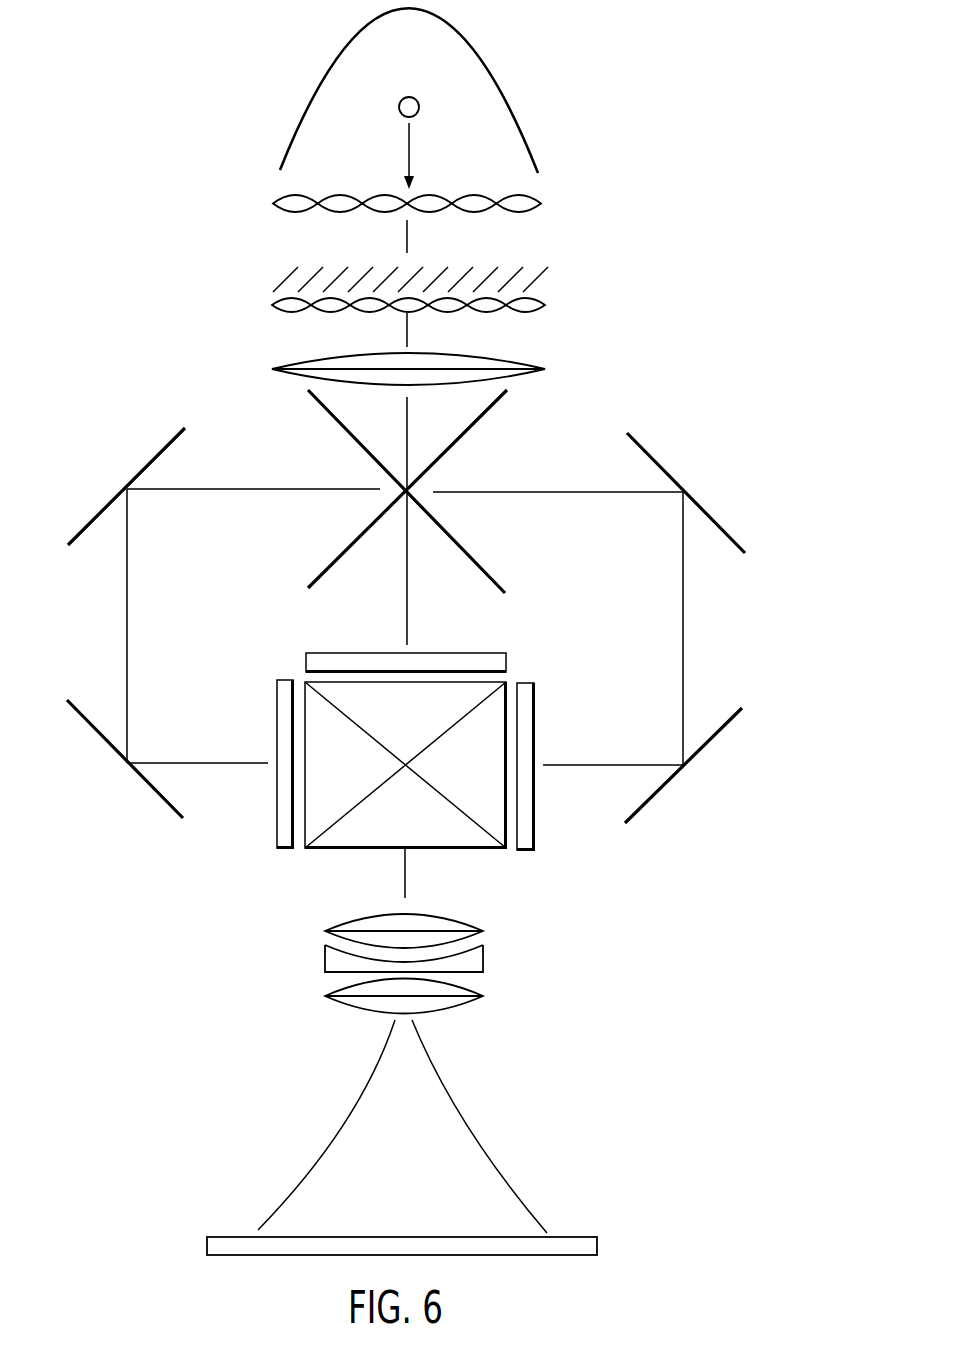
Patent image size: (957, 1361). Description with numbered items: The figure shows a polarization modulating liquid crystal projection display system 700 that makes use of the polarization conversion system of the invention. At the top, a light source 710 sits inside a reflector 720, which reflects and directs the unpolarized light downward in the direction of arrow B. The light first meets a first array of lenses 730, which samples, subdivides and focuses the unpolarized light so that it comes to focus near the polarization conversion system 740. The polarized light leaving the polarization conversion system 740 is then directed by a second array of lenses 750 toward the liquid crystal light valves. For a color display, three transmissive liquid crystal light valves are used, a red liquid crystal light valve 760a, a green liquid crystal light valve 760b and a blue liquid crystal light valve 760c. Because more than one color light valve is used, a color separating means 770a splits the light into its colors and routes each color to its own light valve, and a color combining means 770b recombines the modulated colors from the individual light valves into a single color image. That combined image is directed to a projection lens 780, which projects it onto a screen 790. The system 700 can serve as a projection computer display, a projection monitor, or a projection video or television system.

The polarization modulating liquid crystal projection display system 700 is at (276, 104).
The light source 710 is at (420, 105).
The reflector 720 is at (533, 147).
The first array of lenses 730 is at (542, 205).
The polarization conversion system 740 is at (570, 289).
The second array of lenses 750 is at (543, 369).
The red liquid crystal light valve 760a is at (277, 817).
The green liquid crystal light valve 760b is at (535, 820).
The blue liquid crystal light valve 760c is at (537, 640).
The color separating means 770a is at (702, 477).
The color combining means 770b is at (483, 738).
The projection lens 780 is at (496, 954).
The screen 790 is at (600, 1248).